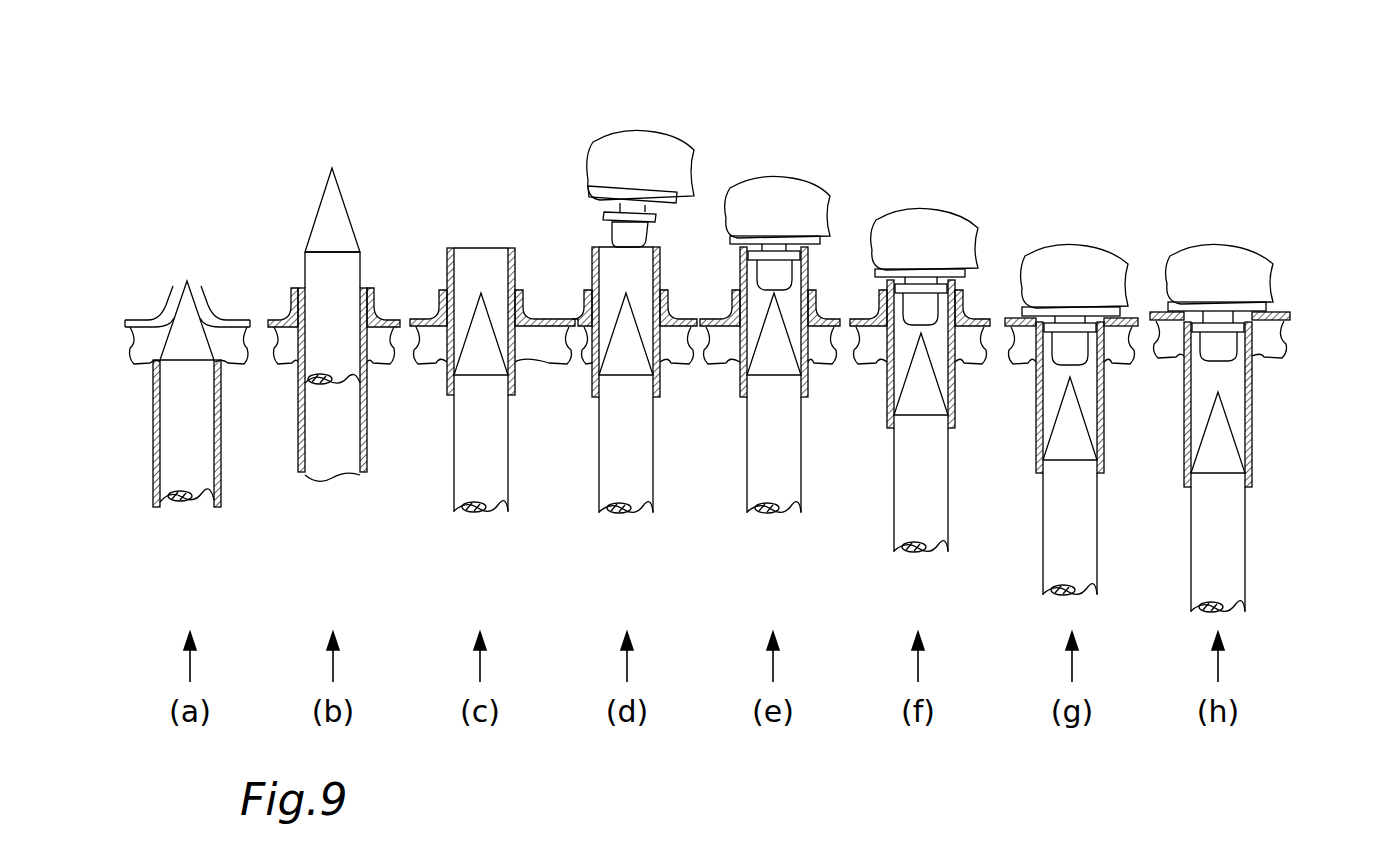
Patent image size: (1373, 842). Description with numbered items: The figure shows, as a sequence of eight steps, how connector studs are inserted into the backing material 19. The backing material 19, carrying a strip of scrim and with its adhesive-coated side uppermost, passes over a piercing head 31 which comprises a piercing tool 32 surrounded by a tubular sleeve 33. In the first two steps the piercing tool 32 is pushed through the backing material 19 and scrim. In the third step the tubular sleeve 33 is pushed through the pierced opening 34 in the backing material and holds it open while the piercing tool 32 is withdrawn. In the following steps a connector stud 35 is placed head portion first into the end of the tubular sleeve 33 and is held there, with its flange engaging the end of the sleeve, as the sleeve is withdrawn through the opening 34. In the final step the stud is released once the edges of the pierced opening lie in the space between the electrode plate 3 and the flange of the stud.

The electrode plate 3 is at (1252, 268).
The backing material 19 is at (176, 316).
The piercing head 31 is at (121, 414).
The piercing tool 32 is at (188, 318).
The tubular sleeve 33 is at (153, 461).
The pierced opening 34 is at (524, 315).
The connector stud 35 is at (620, 208).